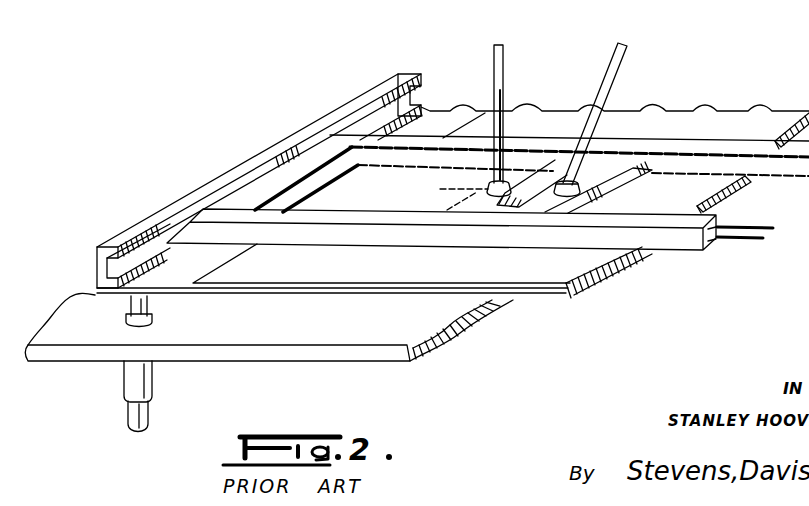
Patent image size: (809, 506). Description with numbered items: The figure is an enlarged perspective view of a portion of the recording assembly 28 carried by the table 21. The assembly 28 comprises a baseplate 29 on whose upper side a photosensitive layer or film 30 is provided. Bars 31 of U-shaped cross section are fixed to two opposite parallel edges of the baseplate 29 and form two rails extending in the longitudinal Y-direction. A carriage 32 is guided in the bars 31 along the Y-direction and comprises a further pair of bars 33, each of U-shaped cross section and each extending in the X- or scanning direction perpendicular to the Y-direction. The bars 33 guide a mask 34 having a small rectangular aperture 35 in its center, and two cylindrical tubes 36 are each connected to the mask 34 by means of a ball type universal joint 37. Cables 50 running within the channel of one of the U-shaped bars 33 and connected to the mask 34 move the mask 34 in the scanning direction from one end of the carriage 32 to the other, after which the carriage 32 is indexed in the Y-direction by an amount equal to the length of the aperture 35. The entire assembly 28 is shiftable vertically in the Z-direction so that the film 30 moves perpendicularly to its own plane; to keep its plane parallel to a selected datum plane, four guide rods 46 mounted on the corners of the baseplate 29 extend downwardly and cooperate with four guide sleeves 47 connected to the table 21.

The table 21 is at (240, 352).
The recording assembly 28 is at (407, 312).
The baseplate 29 is at (334, 295).
The photosensitive layer or film 30 is at (253, 268).
The bars of U-shaped cross section 31 is at (191, 200).
The carriage 32 is at (292, 172).
The bars of U-shaped cross section 33 is at (697, 150).
The mask 34 is at (604, 164).
The rectangular aperture 35 is at (541, 187).
The cylindrical tubes 36 is at (625, 50).
The ball type universal joint 37 is at (492, 189).
The guide rods 46 is at (129, 308).
The guide sleeves 47 is at (125, 380).
The cables 50 is at (752, 238).